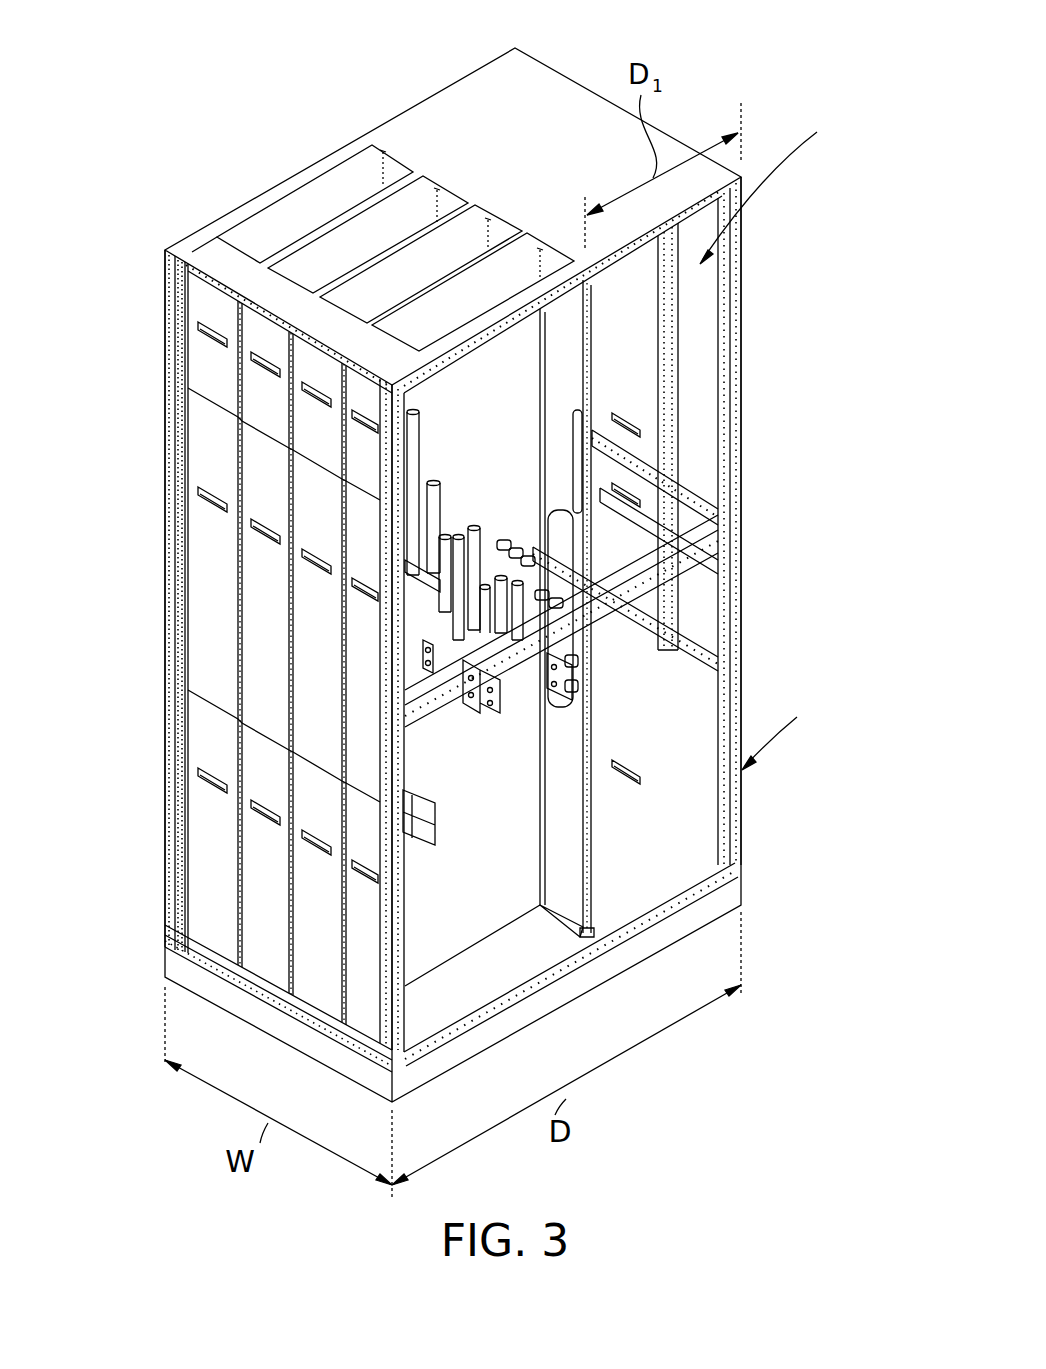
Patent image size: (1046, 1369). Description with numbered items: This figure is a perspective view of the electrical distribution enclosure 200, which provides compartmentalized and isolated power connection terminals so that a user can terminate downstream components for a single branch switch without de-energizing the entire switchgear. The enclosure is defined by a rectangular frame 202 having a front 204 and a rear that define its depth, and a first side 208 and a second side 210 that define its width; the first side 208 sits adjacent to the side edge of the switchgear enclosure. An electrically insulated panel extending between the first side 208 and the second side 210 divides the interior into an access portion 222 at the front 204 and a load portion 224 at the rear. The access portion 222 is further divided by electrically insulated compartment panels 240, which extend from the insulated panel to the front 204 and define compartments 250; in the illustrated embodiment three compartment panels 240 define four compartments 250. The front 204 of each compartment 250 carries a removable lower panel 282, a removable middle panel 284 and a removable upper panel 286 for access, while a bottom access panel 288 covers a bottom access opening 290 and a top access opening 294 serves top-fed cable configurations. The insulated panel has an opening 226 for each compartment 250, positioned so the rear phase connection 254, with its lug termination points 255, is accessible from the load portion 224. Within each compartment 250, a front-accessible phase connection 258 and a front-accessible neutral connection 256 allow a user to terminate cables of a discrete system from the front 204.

The electrical distribution enclosure 200 is at (706, 115).
The rectangular frame 202 is at (745, 258).
The front 204 is at (157, 634).
The first side 208 is at (167, 355).
The second side 210 is at (556, 366).
The access portion 222 is at (492, 470).
The load portion 224 is at (678, 243).
The opening 226 is at (595, 644).
The electrically insulated compartment panel 240 is at (427, 292).
The compartment 250 is at (252, 242).
The rear phase connection 254 is at (590, 478).
The lug termination points 255 is at (540, 560).
The front-accessible neutral connection 256 is at (556, 412).
The front-accessible phase connection 258 is at (600, 440).
The removable lower panel 282 is at (215, 867).
The removable middle panel 284 is at (200, 663).
The removable upper panel 286 is at (207, 377).
The bottom access panel 288 is at (492, 1005).
The bottom access opening 290 is at (608, 938).
The top access opening 294 is at (495, 275).